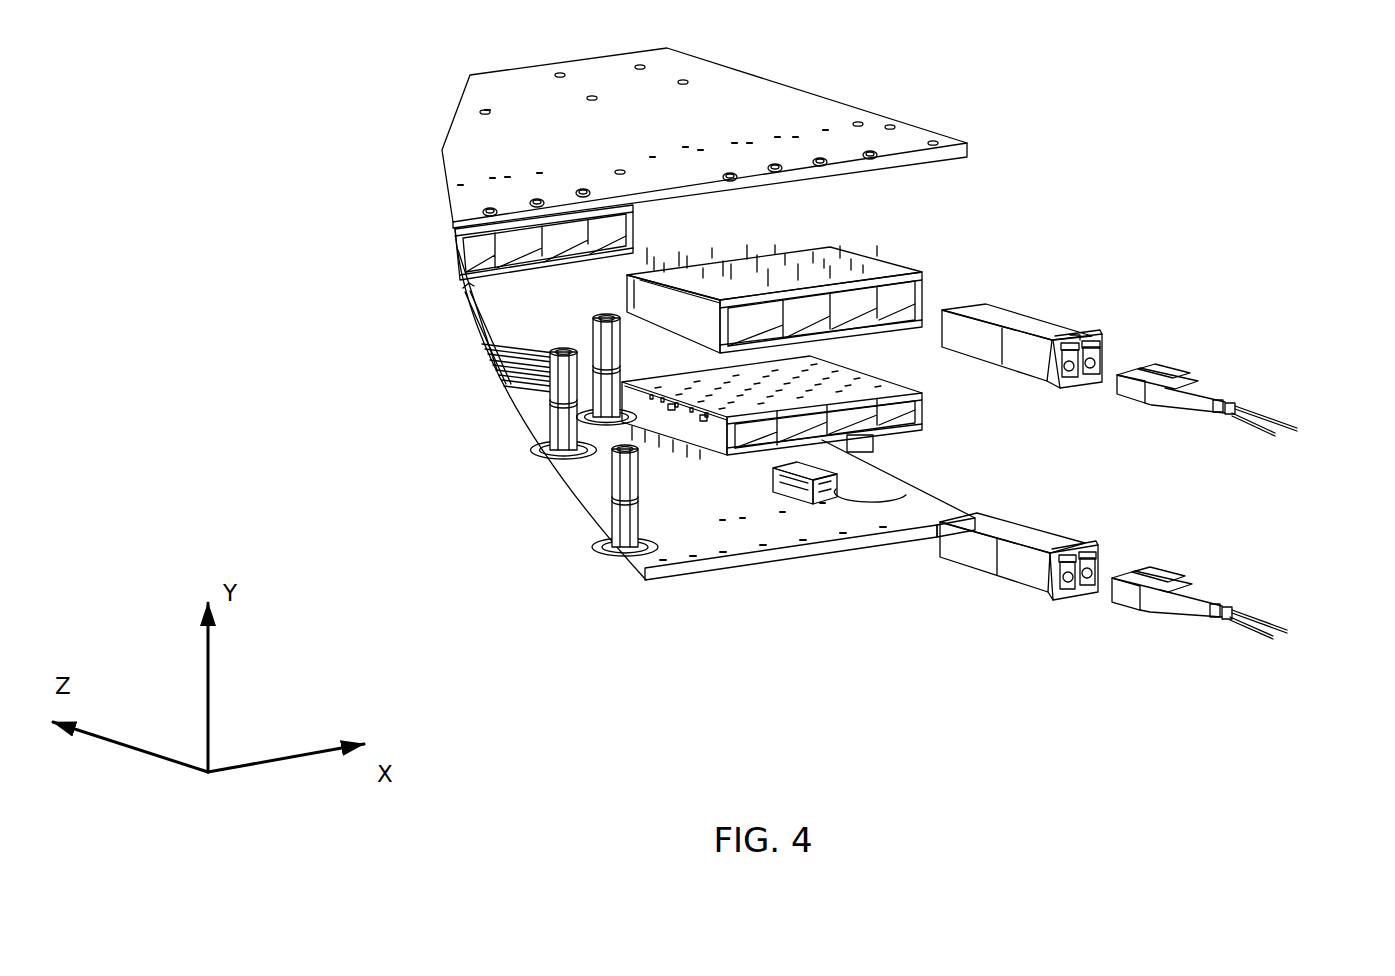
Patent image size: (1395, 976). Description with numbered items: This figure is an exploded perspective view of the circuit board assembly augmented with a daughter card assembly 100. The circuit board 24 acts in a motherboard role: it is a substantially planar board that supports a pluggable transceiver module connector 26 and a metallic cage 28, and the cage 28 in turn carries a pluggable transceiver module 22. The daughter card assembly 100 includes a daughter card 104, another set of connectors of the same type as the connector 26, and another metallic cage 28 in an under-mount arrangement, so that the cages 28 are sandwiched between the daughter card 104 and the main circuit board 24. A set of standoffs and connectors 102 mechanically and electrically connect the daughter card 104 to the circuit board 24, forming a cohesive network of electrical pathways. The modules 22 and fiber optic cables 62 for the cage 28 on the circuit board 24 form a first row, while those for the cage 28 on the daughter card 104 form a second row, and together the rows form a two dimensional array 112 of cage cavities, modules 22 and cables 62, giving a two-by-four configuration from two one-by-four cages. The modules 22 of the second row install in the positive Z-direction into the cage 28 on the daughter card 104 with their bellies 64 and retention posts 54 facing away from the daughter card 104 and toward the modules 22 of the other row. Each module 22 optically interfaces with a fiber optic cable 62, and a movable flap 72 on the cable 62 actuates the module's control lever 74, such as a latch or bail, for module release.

The daughter card assembly 100 is at (1016, 194).
The standoffs and connectors 102 is at (592, 518).
The daughter card 104 is at (704, 164).
The two dimensional array 112 is at (515, 322).
The pluggable transceiver module 22 is at (1100, 408).
The circuit board 24 is at (735, 565).
The pluggable transceiver module connector 26 is at (772, 478).
The metallic cage 28 is at (692, 314).
The retention post 54 is at (1031, 463).
The belly 64 is at (1004, 373).
The control lever 74 is at (1079, 335).
The movable flap 72 is at (1170, 367).
The fiber optic cable 62 is at (1280, 470).